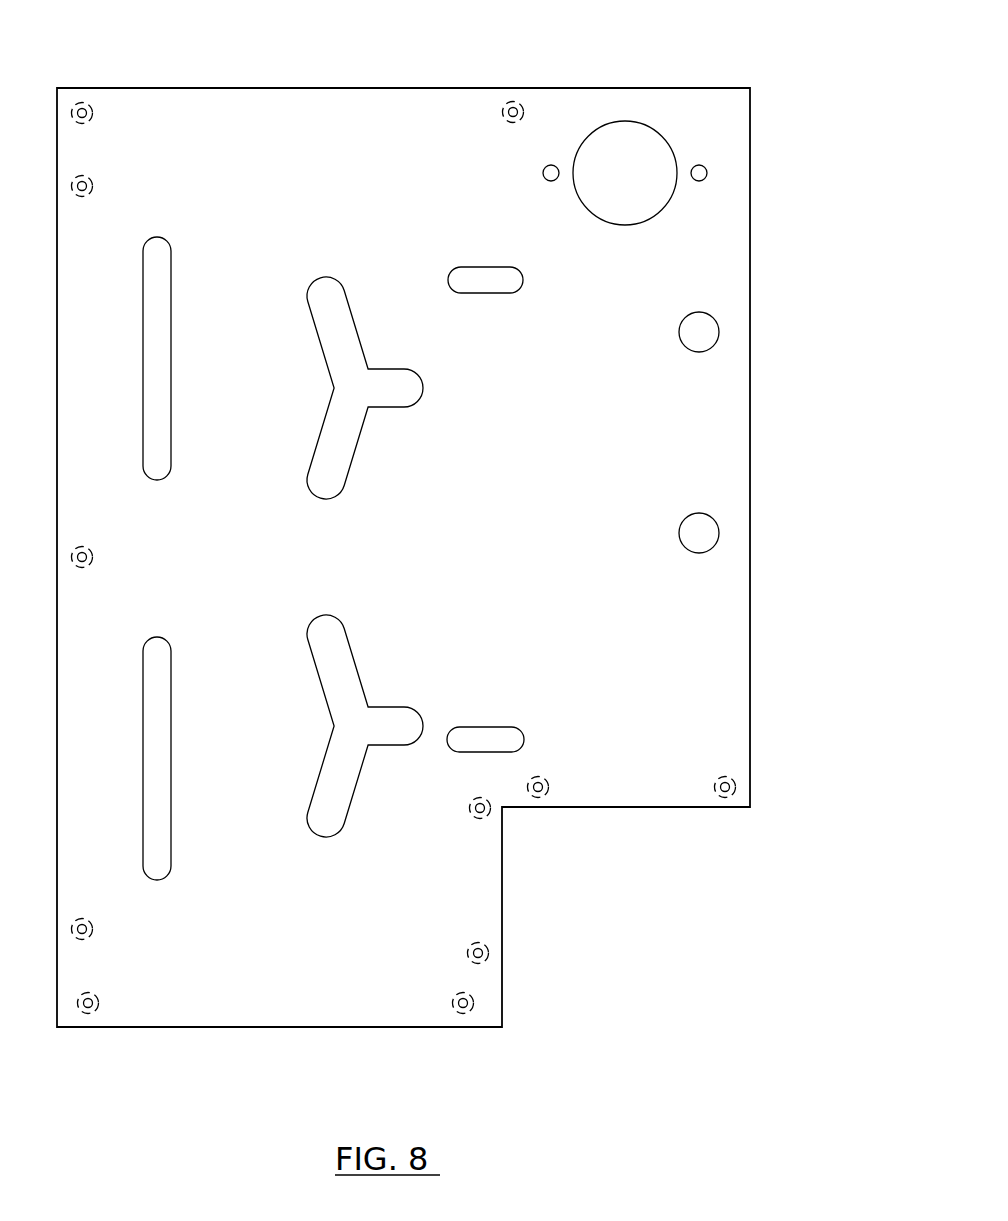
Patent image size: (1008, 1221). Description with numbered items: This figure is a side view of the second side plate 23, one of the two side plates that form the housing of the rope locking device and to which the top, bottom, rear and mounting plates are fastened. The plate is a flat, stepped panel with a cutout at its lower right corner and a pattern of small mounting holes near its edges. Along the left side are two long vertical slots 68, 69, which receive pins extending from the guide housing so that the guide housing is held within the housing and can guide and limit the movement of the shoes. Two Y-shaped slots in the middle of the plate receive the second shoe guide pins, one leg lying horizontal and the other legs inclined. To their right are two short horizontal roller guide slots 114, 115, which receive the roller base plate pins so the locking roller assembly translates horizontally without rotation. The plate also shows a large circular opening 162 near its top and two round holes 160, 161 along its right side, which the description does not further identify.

The second side plate 23 is at (750, 183).
The large circular opening 162 is at (622, 150).
The horizontal roller guide slot 114 is at (468, 277).
The horizontal roller guide slot 115 is at (468, 738).
The slot 69 is at (158, 374).
The slot 68 is at (160, 787).
The circular hole 160 is at (683, 348).
The circular hole 161 is at (698, 556).